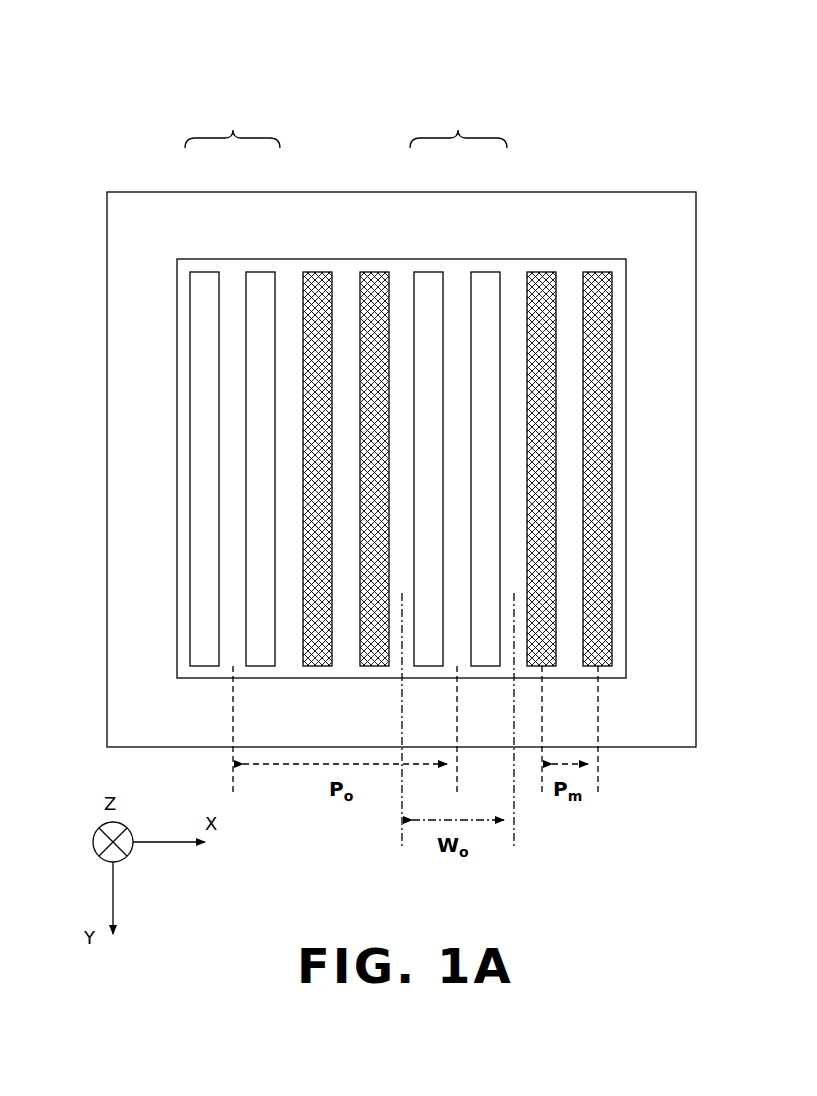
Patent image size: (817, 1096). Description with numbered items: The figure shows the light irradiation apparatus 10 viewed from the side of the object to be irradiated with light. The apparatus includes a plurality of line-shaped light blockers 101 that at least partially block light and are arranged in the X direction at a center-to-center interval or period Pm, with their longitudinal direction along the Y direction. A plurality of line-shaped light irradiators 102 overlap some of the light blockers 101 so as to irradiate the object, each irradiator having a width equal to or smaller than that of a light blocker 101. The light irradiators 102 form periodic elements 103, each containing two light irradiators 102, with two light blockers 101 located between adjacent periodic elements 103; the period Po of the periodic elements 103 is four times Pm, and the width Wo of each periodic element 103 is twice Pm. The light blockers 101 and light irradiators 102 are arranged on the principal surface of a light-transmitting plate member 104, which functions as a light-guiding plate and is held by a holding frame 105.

The light irradiation apparatus 10 is at (440, 410).
The light blockers 101 is at (318, 287).
The light irradiators 102 is at (205, 287).
The periodic elements 103 is at (233, 130).
The plate member 104 is at (620, 385).
The holding frame 105 is at (683, 482).